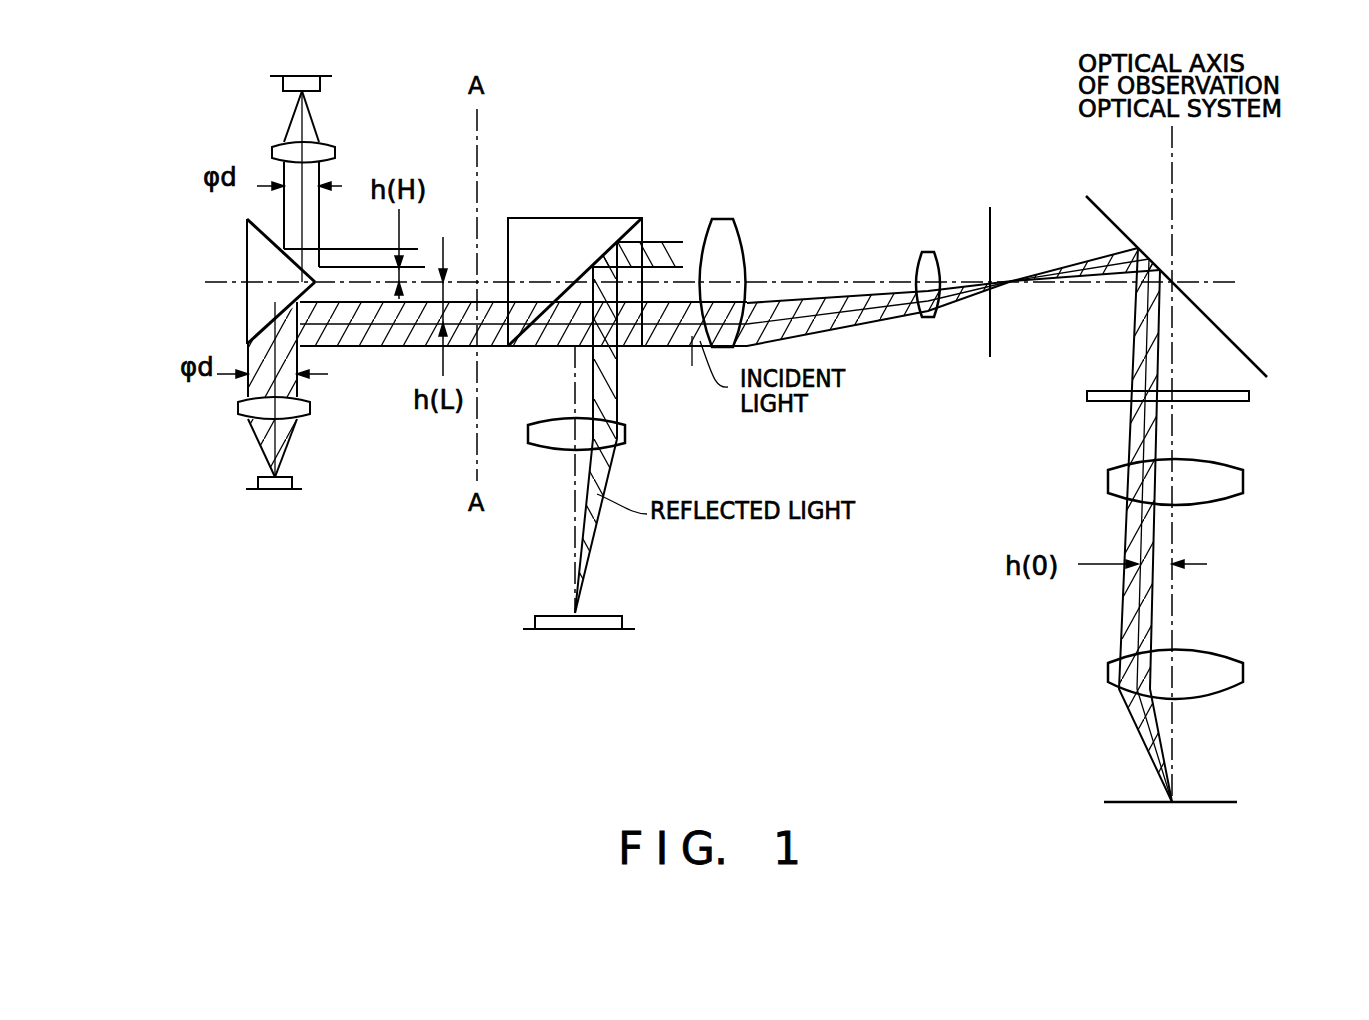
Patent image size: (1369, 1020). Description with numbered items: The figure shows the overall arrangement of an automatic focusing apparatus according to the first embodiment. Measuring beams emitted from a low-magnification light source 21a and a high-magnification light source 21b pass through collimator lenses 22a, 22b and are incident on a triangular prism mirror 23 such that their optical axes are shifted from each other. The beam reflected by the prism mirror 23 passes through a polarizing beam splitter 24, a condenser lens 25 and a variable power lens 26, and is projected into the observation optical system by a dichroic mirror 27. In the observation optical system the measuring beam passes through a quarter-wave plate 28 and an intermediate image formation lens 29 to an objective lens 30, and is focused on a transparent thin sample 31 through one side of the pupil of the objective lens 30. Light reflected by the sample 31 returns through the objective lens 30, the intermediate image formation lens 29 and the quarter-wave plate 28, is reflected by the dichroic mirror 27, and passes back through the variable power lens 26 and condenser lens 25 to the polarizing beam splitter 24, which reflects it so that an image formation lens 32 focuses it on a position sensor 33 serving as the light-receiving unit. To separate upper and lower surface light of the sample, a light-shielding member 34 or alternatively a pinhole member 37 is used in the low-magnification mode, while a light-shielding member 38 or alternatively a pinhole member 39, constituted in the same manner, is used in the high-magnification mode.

The low-magnification light source 21a is at (272, 492).
The high-magnification light source 21b is at (295, 77).
The collimator lens 22a is at (310, 412).
The collimator lens 22b is at (272, 152).
The triangular prism mirror 23 is at (248, 253).
The polarizing beam splitter 24 is at (560, 228).
The condenser lens 25 is at (722, 228).
The variable power lens 26 is at (928, 320).
The dichroic mirror 27 is at (1112, 210).
The λ/4 plate 28 is at (1087, 396).
The intermediate image formation lens 29 is at (1243, 483).
The objective lens 30 is at (1243, 675).
The transparent thin sample 31 is at (1230, 803).
The image formation lens 32 is at (625, 430).
The position sensor 33 is at (602, 617).
The light-shielding member 34 is at (959, 255).
The pinhole member 37 is at (989, 255).
The light-shielding member 38 is at (1020, 255).
The pinhole member 39 is at (1016, 268).